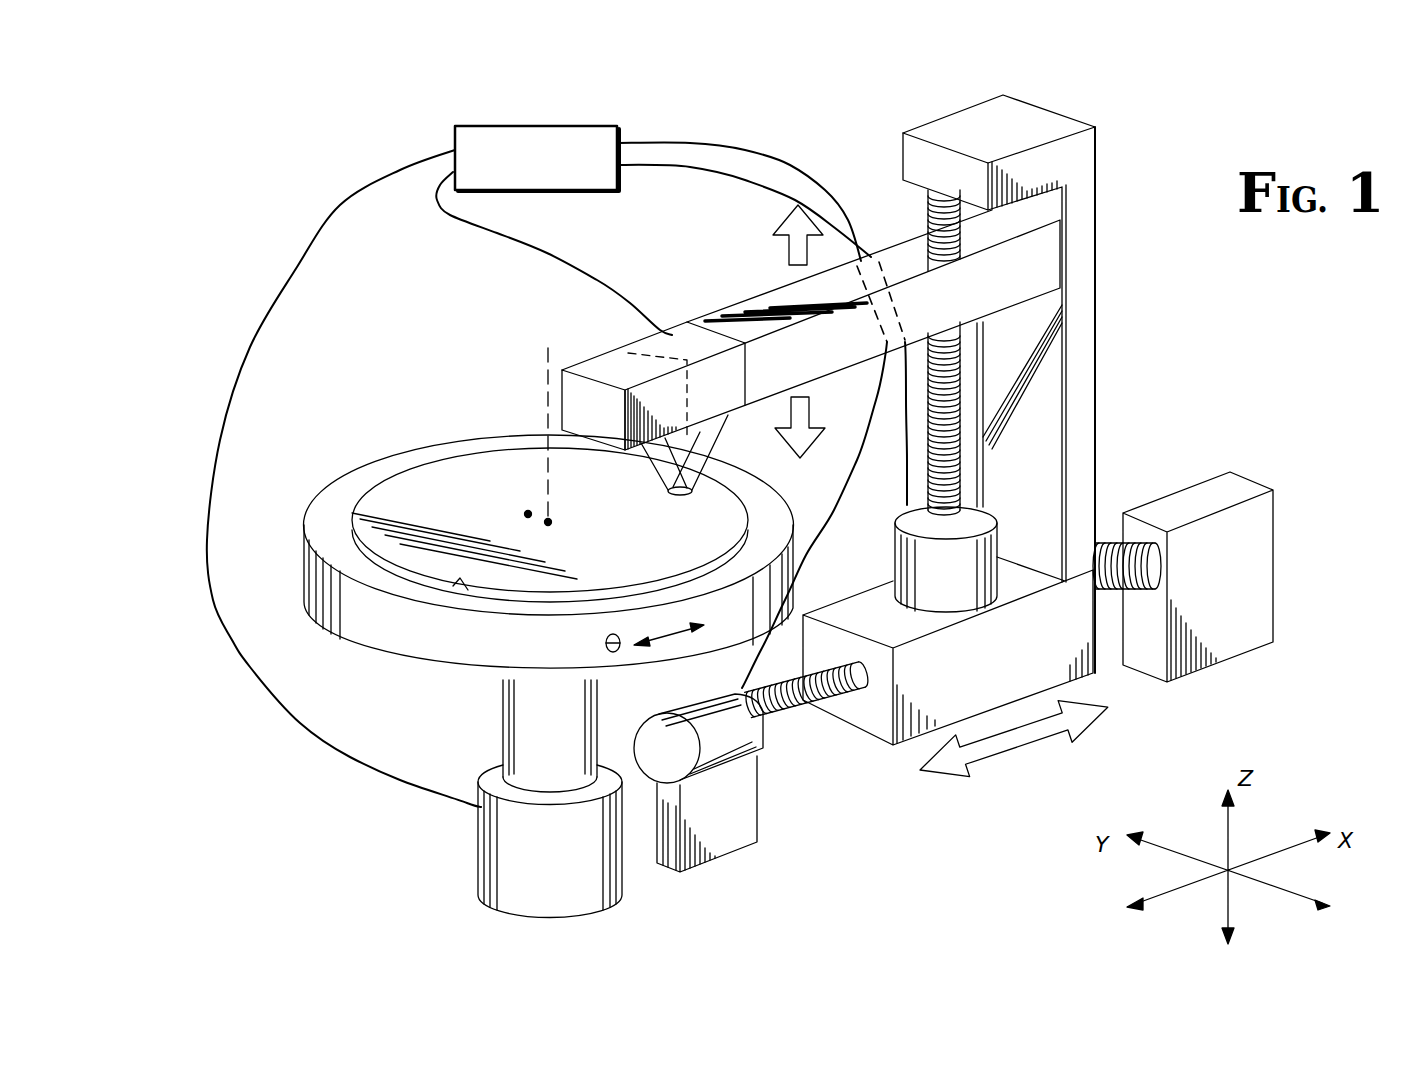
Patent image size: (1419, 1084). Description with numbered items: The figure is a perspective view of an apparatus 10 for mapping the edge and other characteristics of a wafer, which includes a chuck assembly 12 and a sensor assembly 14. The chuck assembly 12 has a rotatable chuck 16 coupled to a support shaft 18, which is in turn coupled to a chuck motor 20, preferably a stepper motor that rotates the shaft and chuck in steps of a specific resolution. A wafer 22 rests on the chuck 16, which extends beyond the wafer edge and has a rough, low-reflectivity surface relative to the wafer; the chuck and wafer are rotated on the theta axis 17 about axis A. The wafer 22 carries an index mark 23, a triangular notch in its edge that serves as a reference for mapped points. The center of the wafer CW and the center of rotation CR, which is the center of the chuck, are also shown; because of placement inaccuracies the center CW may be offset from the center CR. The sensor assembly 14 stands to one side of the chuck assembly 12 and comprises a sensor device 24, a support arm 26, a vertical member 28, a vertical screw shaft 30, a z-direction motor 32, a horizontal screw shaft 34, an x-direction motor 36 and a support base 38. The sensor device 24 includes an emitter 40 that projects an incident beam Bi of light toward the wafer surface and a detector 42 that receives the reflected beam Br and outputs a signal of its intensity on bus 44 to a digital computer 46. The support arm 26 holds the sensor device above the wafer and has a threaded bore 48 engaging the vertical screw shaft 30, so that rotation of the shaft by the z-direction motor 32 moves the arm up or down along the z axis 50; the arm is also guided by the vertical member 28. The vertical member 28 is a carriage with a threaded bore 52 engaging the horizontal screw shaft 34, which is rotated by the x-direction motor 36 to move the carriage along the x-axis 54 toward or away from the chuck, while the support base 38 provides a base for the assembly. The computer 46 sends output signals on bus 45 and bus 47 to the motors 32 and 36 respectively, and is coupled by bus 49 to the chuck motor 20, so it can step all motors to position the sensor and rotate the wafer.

The apparatus 10 is at (250, 140).
The chuck assembly 12 is at (358, 788).
The sensor assembly 14 is at (838, 112).
The rotatable chuck 16 is at (336, 622).
The θ axis 17 is at (675, 622).
The support shaft 18 is at (505, 726).
The chuck motor 20 is at (487, 843).
The wafer 22 is at (388, 495).
The index mark 23 is at (472, 588).
The sensor device 24 is at (602, 315).
The support arm 26 is at (758, 300).
The vertical member 28 is at (1085, 288).
The vertical screw shaft 30 is at (962, 465).
The z-direction motor 32 is at (900, 570).
The horizontal screw shaft 34 is at (793, 718).
The x-direction motor 36 is at (758, 760).
The support base 38 is at (740, 848).
The emitter 40 is at (612, 362).
The detector 42 is at (680, 332).
The bus 44 is at (452, 228).
The bus 45 is at (704, 148).
The digital computer 46 is at (612, 124).
The bus 47 is at (762, 184).
The threaded bore 48 is at (926, 258).
The bus 49 is at (360, 200).
The z axis 50 is at (1222, 848).
The threaded bore 52 is at (875, 722).
The x-axis 54 is at (1268, 850).
The axis A is at (529, 358).
The reflected beam Br is at (712, 442).
The incident beam Bi is at (660, 485).
The center of the wafer CW is at (511, 502).
The center of rotation CR is at (563, 441).